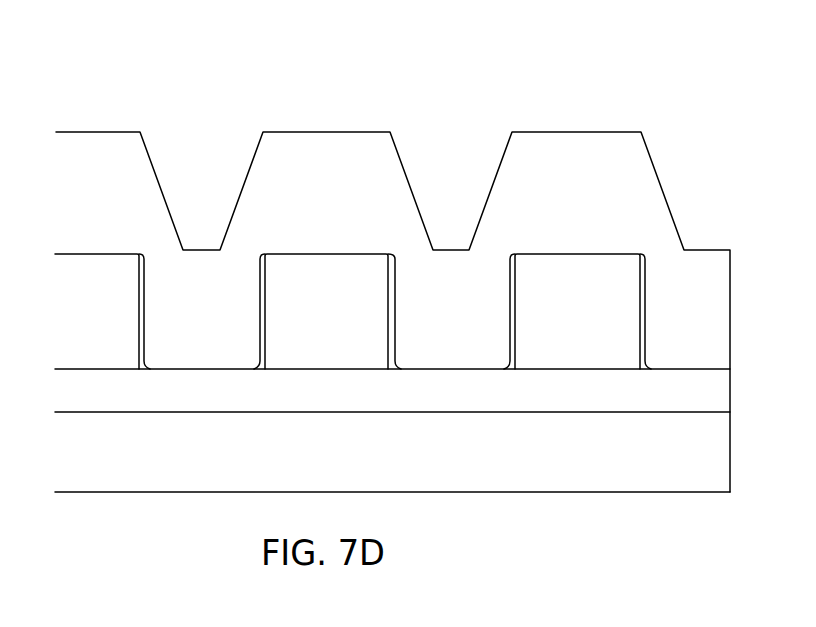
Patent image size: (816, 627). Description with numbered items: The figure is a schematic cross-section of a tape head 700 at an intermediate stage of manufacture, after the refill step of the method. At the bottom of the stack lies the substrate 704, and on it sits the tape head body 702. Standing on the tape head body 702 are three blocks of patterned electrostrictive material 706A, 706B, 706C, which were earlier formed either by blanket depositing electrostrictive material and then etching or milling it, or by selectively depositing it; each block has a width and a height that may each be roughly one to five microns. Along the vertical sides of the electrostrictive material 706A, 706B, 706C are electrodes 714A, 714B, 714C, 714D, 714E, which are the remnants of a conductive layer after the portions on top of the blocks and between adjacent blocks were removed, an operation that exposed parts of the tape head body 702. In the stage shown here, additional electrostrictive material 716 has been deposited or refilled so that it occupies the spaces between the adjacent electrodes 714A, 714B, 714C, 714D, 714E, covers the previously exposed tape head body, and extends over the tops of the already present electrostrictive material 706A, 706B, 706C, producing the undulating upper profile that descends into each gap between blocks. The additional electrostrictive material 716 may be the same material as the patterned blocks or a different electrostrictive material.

The tape head 700 is at (150, 70).
The tape head body 702 is at (348, 403).
The substrate 704 is at (348, 465).
The patterned electrostrictive material 706A is at (124, 325).
The patterned electrostrictive material 706B is at (355, 325).
The patterned electrostrictive material 706C is at (607, 325).
The electrode 714A is at (144, 287).
The electrode 714B is at (258, 338).
The electrode 714C is at (395, 287).
The electrode 714D is at (510, 340).
The electrode 714E is at (645, 287).
The additional electrostrictive material 716 is at (327, 132).